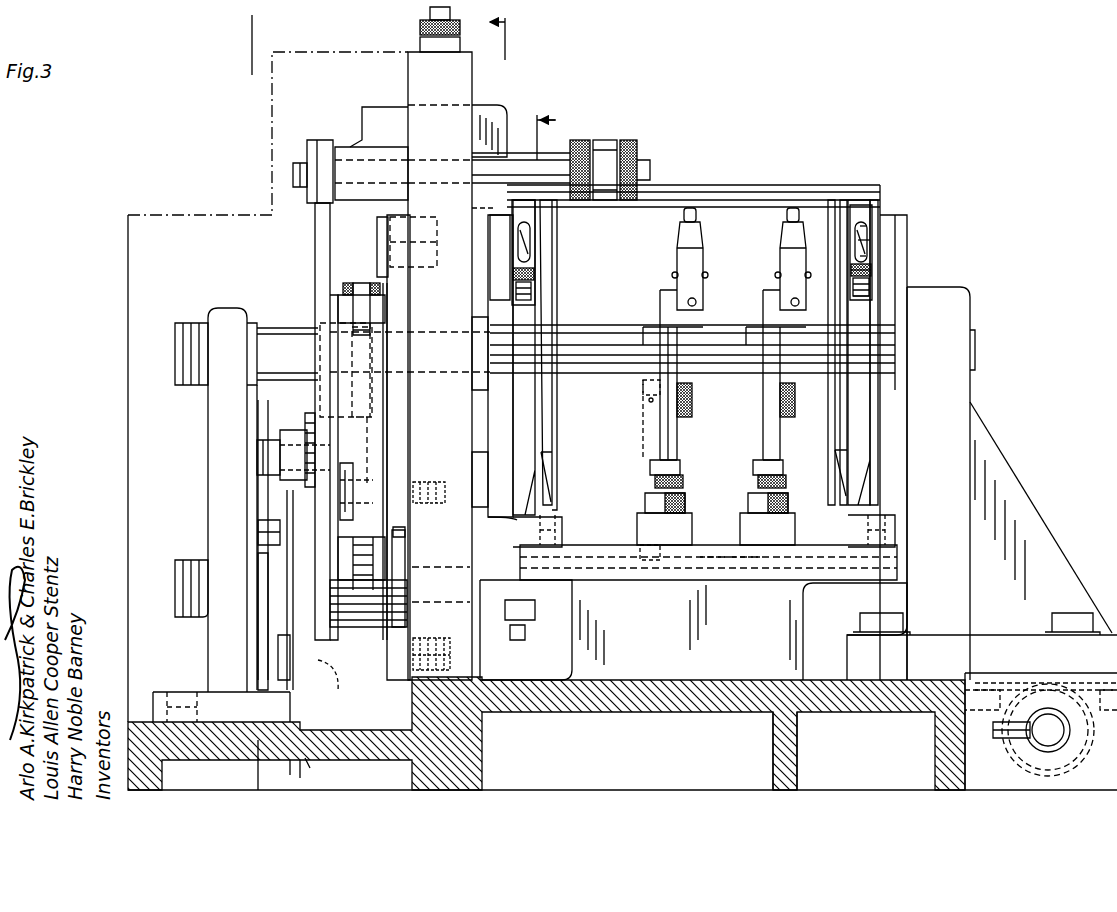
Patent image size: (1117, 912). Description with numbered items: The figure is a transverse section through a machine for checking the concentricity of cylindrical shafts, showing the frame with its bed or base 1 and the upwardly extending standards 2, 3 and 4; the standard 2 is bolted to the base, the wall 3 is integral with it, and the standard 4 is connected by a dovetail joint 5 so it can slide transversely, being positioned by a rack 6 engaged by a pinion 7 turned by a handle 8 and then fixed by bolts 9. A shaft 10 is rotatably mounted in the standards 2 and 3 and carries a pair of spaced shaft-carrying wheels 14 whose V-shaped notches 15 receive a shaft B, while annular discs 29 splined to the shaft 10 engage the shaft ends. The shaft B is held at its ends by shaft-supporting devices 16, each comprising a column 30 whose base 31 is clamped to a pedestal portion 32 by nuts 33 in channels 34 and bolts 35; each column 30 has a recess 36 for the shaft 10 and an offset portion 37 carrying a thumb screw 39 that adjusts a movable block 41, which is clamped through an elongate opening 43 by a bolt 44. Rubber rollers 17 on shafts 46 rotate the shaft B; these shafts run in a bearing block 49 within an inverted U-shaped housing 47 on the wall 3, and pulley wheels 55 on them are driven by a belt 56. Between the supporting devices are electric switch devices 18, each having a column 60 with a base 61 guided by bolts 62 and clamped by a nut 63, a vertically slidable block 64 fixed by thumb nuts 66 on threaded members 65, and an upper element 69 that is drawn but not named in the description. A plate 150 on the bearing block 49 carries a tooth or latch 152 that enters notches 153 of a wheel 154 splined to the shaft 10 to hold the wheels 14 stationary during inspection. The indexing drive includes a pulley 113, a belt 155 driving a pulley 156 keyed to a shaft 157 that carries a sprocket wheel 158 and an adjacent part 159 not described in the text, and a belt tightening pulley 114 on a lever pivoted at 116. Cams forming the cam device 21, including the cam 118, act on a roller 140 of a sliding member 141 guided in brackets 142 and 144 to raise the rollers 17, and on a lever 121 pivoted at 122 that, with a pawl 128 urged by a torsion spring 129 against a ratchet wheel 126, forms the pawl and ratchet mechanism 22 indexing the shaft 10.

The bed or base 1 is at (482, 750).
The standard 2 is at (208, 453).
The standard or wall 3 is at (475, 655).
The standard 4 is at (250, 18).
The dovetail joint 5 is at (922, 686).
The rack 6 is at (1046, 680).
The pinion 7 is at (995, 770).
The handle 8 is at (1000, 733).
The bolts 9 is at (884, 614).
The shaft 10 is at (258, 344).
The shaft-carrying wheels 14 is at (550, 485).
The notches 15 is at (548, 458).
The shaft-supporting devices 16 is at (528, 292).
The rollers 17 is at (628, 140).
The electric switch devices 18 is at (673, 262).
The cam device 21 is at (382, 630).
The pawl and ratchet mechanism 22 is at (328, 310).
The annular disc 29 is at (508, 427).
The column 30 is at (530, 415).
The base 31 is at (562, 530).
The pedestal portion 32 is at (795, 612).
The nuts 33 is at (560, 560).
The channels 34 is at (722, 558).
The bolts 35 is at (560, 514).
The recess 36 is at (897, 315).
The angularly offset portion 37 is at (870, 297).
The thumb screw 39 is at (872, 268).
The movable block 41 is at (870, 251).
The elongate opening 43 is at (870, 226).
The bolt 44 is at (870, 240).
The shafts 46 is at (522, 153).
The hollow housing 47 is at (410, 74).
The bearing block 49 is at (375, 108).
The pulley wheel 55 is at (308, 141).
The belt 56 is at (315, 243).
The column 60 is at (650, 438).
The base 61 is at (692, 520).
The bolts 62 is at (645, 560).
The nut 63 is at (686, 498).
The block 64 is at (678, 425).
The threaded members 65 is at (648, 400).
The thumb nuts 66 is at (695, 385).
The tool tip 69 is at (684, 218).
The pulley 113 is at (342, 686).
The belt tightening pulley 114 is at (305, 413).
The pivot 116 is at (280, 653).
The cam 118 is at (405, 545).
The lever 121 is at (340, 388).
The pivot 122 is at (368, 483).
The ratchet wheel 126 is at (352, 403).
The pawl 128 is at (358, 283).
The torsion spring 129 is at (343, 290).
The roller 140 is at (406, 522).
The sliding member 141 is at (412, 406).
The bracket 142 is at (400, 428).
The bracket 144 is at (388, 245).
The plate 150 is at (497, 108).
The tooth or latch 152 is at (472, 206).
The notches 153 is at (485, 352).
The wheel 154 is at (490, 270).
The belt 155 is at (305, 770).
The pulley 156 is at (260, 632).
The shaft 157 is at (438, 612).
The sprocket wheel 158 is at (518, 622).
The screw 159 is at (514, 638).
The shaft B is at (777, 184).